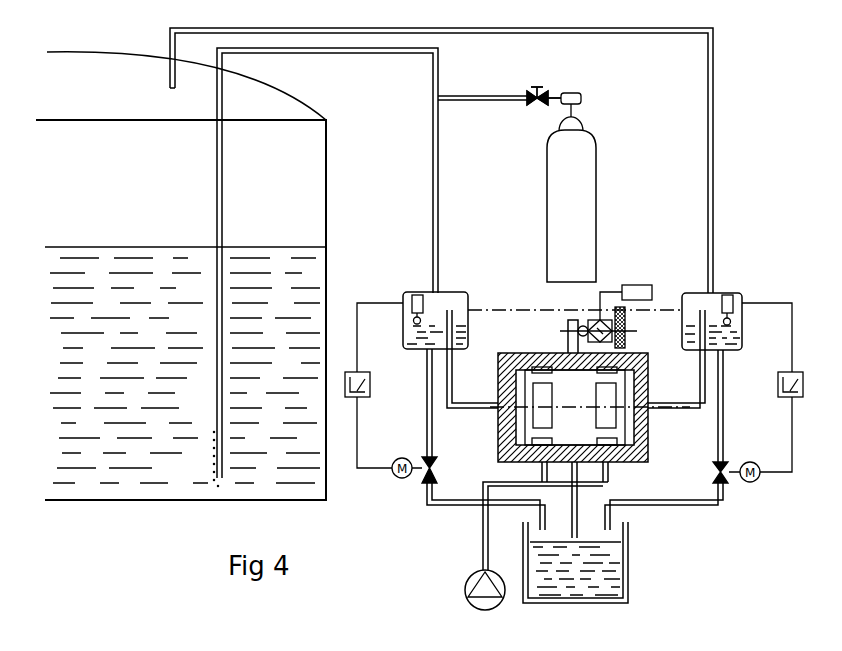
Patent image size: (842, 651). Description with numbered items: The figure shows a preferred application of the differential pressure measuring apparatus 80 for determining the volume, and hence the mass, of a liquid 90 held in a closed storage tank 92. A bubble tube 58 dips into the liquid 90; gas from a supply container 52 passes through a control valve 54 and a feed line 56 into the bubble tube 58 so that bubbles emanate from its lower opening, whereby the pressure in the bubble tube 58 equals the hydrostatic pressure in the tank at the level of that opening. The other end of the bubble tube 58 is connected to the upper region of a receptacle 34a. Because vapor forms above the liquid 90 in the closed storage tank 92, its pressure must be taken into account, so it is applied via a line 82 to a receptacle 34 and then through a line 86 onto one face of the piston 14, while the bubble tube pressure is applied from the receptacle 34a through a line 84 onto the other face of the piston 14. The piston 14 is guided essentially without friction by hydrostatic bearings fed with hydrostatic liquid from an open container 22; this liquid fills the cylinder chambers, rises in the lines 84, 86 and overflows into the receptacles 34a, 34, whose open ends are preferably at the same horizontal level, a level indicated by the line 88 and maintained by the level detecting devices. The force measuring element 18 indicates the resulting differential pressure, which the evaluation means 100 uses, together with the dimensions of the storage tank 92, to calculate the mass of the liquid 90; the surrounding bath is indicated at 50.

The piston 14 is at (563, 378).
The force measuring element 18 is at (595, 318).
The container 22 is at (618, 557).
The receptacle 34 is at (742, 338).
The receptacle 34a is at (405, 332).
The liquid tank 50 is at (327, 490).
The supply container 52 is at (588, 197).
The control valve 54 is at (528, 106).
The feed line 56 is at (480, 106).
The bubble tube 58 is at (223, 198).
The differential pressure measuring apparatus 80 is at (665, 470).
The line 82 is at (713, 135).
The line 84 is at (452, 368).
The line 86 is at (700, 370).
The liquid level line 88 is at (515, 307).
The liquid 90 is at (327, 278).
The storage tank 92 is at (277, 102).
The evaluation means 100 is at (642, 290).